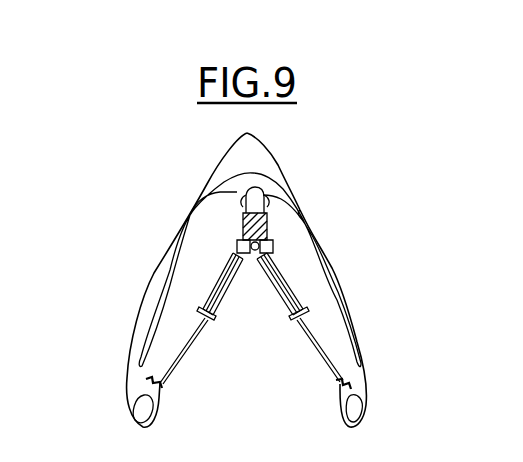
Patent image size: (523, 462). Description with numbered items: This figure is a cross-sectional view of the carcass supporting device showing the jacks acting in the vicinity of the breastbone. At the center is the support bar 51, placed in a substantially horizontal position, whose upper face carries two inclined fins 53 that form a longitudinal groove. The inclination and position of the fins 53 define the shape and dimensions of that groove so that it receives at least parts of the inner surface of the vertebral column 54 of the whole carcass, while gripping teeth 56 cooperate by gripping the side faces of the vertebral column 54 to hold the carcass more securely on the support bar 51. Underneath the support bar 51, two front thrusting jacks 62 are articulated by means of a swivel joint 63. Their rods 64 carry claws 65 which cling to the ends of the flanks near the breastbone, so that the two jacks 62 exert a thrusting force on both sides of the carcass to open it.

The support bar 51 is at (245, 227).
The inclined fins 53 is at (250, 210).
The vertebral column 54 is at (256, 191).
The gripping teeth 56 is at (243, 194).
The front thrusting jacks 62 is at (221, 288).
The swivel joint 63 is at (245, 243).
The rods 64 is at (181, 345).
The claws 65 is at (146, 379).